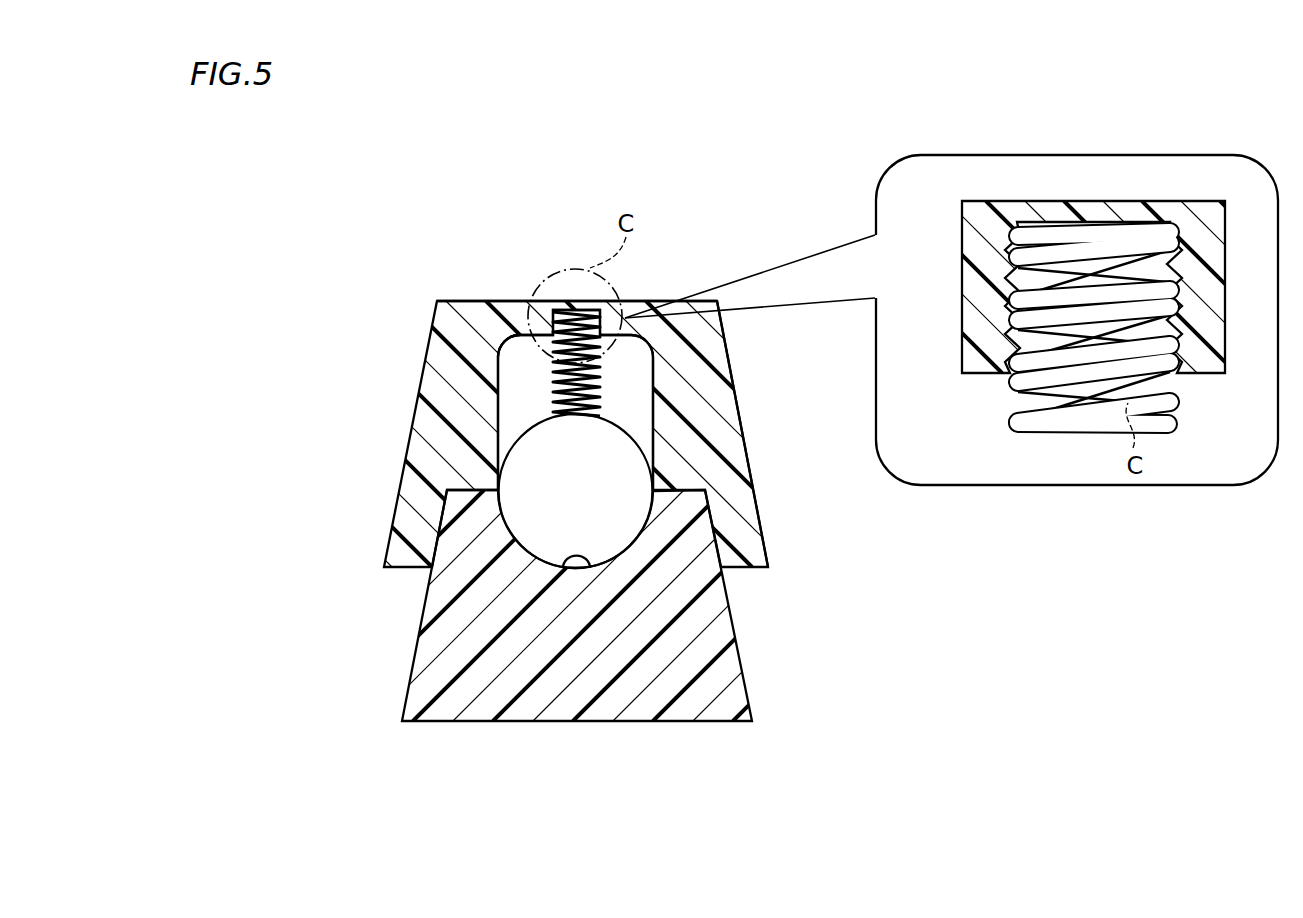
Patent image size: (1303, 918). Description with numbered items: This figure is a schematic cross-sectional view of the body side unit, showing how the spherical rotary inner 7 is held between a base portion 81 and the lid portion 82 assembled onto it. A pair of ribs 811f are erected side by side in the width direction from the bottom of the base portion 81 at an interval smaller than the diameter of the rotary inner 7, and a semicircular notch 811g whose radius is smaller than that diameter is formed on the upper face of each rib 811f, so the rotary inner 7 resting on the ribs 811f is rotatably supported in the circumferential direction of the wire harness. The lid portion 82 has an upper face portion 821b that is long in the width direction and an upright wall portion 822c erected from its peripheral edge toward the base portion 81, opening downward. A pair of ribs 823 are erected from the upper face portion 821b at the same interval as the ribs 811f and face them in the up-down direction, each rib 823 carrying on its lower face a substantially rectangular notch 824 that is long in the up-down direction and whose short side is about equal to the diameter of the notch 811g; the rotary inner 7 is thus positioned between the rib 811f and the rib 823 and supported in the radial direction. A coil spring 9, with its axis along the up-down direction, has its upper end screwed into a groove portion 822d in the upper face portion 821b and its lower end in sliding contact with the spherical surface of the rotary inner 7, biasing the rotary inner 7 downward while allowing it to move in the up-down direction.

The lid portion 82 is at (465, 298).
The upper face portion 821b is at (493, 325).
The upright wall portion 822c is at (703, 347).
The groove portion 822d is at (1020, 283).
The rib 823 is at (517, 410).
The notch 824 is at (513, 360).
The coil spring 9 is at (600, 388).
The rotary inner 7 is at (625, 467).
The base portion 81 is at (608, 643).
The rib 811f is at (687, 623).
The notch 811g is at (562, 565).